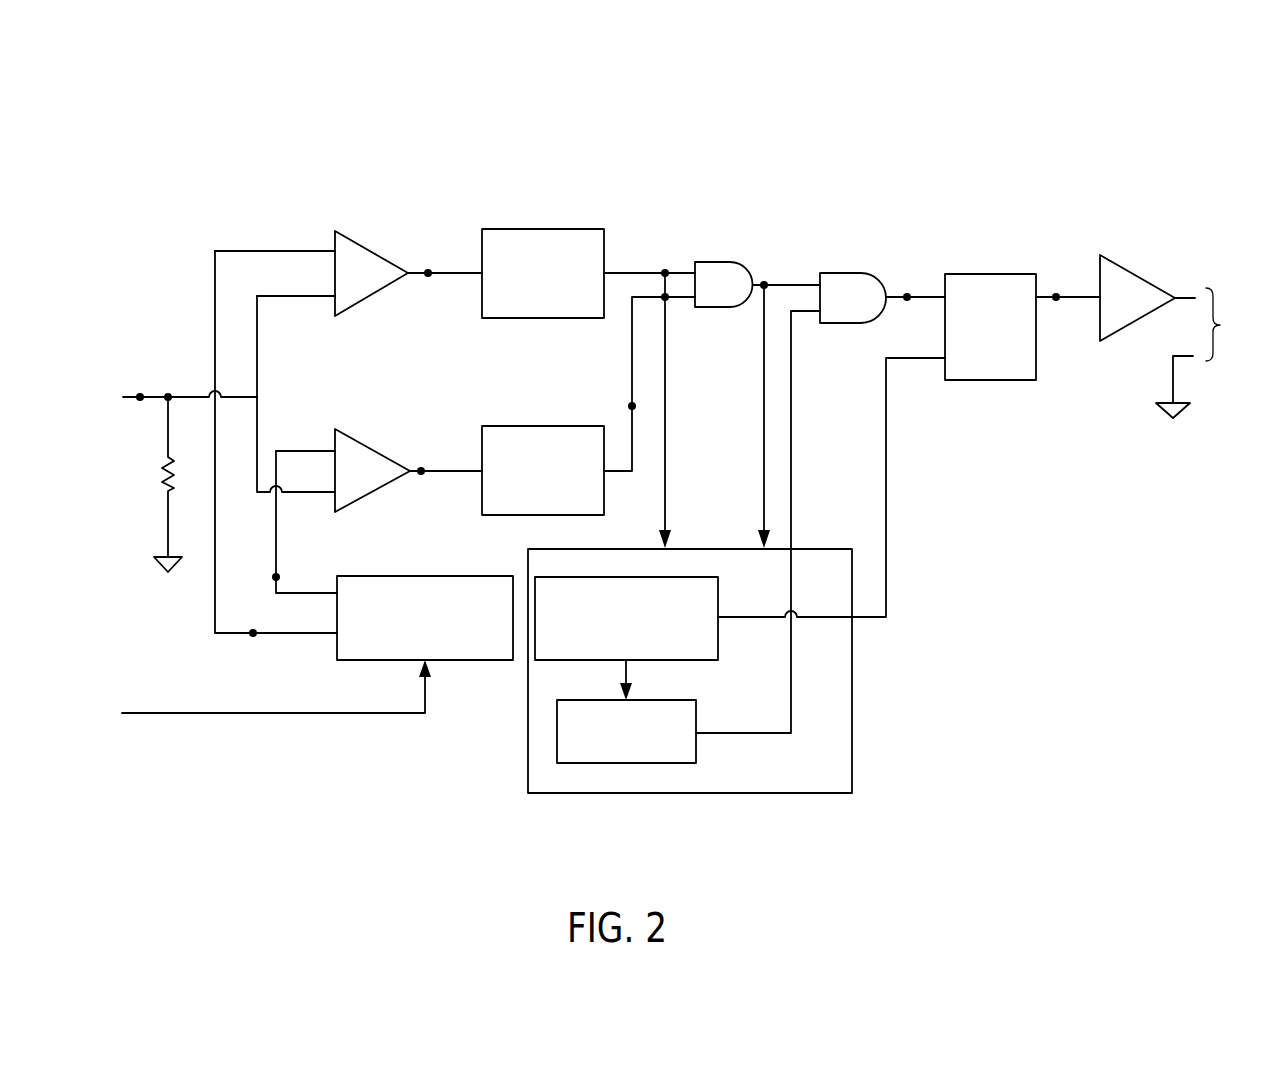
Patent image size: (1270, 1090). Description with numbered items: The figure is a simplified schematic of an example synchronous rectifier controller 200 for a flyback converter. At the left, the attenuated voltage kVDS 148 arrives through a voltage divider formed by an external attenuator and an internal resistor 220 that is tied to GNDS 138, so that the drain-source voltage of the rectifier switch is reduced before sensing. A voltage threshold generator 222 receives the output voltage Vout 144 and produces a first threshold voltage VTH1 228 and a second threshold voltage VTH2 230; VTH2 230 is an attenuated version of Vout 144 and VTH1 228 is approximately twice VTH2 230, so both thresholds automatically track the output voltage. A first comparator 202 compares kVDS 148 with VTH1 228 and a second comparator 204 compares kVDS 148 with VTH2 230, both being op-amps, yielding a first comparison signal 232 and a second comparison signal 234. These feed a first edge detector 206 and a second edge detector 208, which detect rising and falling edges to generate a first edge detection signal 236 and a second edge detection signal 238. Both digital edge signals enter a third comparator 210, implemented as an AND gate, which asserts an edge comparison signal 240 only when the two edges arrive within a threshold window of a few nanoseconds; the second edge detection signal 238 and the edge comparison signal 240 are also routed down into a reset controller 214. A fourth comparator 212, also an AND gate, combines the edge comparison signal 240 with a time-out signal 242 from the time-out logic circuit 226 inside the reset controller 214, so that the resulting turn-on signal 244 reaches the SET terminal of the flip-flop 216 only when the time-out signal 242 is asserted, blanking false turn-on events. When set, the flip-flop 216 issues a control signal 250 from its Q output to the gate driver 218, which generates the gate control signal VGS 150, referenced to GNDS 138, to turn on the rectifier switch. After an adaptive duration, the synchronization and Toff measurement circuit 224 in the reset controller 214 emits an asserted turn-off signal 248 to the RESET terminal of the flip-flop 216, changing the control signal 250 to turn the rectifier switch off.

The synchronous rectifier controller 200 is at (988, 70).
The attenuated voltage kVDS 148 is at (140, 397).
The internal resistor 220 is at (162, 475).
The GNDS 138 is at (658, 490).
The first comparator 202 is at (374, 270).
The second comparator 204 is at (374, 468).
The first threshold voltage VTH1 228 is at (253, 633).
The second threshold voltage VTH2 230 is at (276, 577).
The output voltage Vout 144 is at (255, 695).
The voltage threshold generator 222 is at (425, 618).
The first comparison signal 232 is at (428, 272).
The second comparison signal 234 is at (421, 471).
The first edge detector 206 is at (543, 273).
The second edge detector 208 is at (543, 470).
The first edge detection signal 236 is at (665, 272).
The second edge detection signal 238 is at (632, 406).
The third comparator 210 is at (718, 283).
The edge comparison signal 240 is at (764, 284).
The fourth comparator 212 is at (845, 292).
The turn-on signal 244 is at (907, 297).
The flip-flop 216 is at (1005, 360).
The control signal 250 is at (1056, 297).
The gate driver 218 is at (1122, 279).
The gate control signal VGS 150 is at (1223, 324).
The time-out signal 242 is at (791, 435).
The turn-off signal 248 is at (905, 507).
The reset controller 214 is at (690, 671).
The synchronization and Toff measurement circuit 224 is at (626, 618).
The time-out logic circuit 226 is at (626, 711).